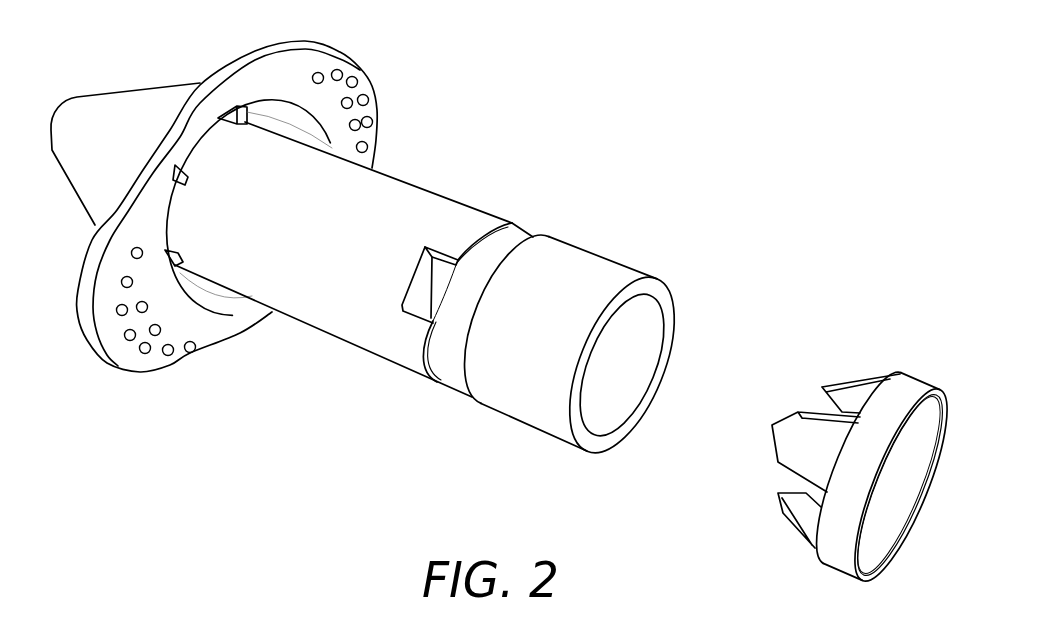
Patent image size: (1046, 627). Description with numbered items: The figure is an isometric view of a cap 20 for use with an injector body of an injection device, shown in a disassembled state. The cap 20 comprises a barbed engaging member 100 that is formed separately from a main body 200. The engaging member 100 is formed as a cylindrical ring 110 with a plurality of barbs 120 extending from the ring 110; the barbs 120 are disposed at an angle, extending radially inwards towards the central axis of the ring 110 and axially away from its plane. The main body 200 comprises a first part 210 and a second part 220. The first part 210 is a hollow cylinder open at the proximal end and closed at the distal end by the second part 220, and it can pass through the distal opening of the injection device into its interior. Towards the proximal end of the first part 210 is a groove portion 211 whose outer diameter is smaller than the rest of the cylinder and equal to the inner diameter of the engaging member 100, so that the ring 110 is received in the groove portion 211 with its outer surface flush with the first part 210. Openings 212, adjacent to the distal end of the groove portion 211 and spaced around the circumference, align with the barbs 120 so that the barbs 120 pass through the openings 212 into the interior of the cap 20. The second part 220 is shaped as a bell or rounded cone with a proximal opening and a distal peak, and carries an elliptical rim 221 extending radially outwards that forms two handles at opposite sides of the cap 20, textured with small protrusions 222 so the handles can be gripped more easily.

The cap 20 is at (522, 80).
The barbed engaging member 100 is at (917, 378).
The cylindrical ring 110 is at (838, 550).
The barbs 120 is at (793, 433).
The main body 200 is at (336, 393).
The first part 210 is at (304, 330).
The groove portion 211 is at (533, 238).
The openings 212 is at (430, 282).
The second part 220 is at (240, 336).
The rim 221 is at (348, 65).
The small protrusions 222 is at (364, 100).